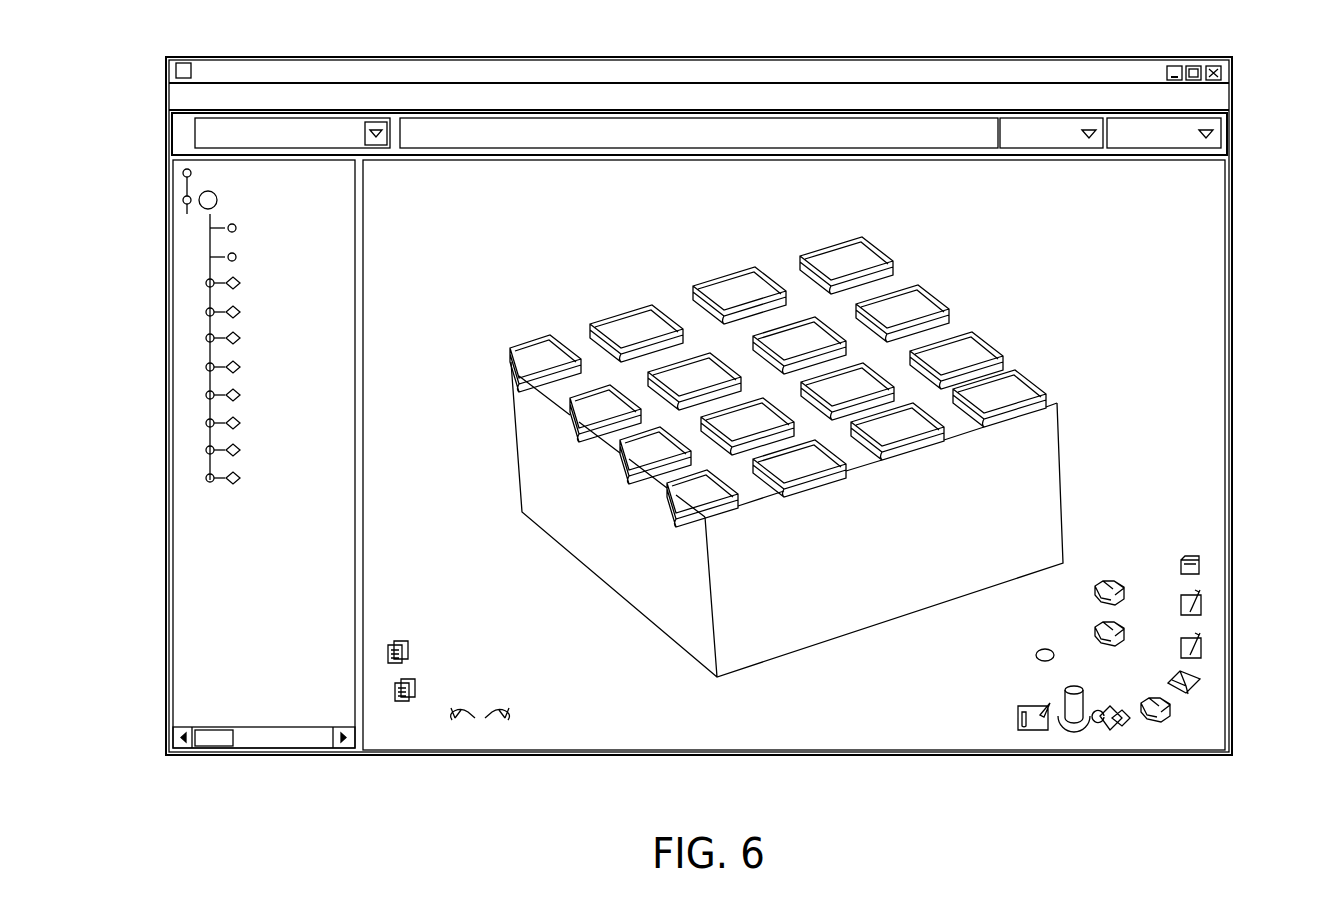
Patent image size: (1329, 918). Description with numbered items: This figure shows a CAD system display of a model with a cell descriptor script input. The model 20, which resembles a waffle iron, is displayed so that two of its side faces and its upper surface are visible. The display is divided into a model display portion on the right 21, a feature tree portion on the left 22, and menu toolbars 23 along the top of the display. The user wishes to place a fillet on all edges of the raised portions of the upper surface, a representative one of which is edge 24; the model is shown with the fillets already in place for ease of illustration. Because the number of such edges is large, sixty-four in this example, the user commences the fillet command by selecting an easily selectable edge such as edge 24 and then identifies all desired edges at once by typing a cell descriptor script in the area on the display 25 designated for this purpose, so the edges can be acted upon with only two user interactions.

The model 20 is at (786, 525).
The model display portion 21 is at (1206, 500).
The feature tree portion 22 is at (223, 663).
The menu toolbars 23 is at (869, 82).
The edge 24 is at (803, 488).
The area on the display 25 is at (621, 125).